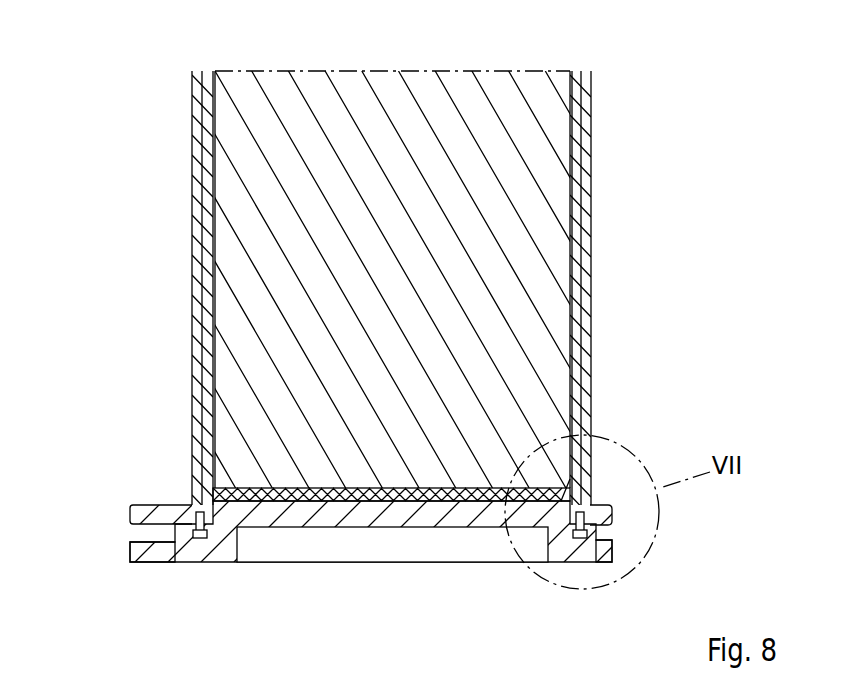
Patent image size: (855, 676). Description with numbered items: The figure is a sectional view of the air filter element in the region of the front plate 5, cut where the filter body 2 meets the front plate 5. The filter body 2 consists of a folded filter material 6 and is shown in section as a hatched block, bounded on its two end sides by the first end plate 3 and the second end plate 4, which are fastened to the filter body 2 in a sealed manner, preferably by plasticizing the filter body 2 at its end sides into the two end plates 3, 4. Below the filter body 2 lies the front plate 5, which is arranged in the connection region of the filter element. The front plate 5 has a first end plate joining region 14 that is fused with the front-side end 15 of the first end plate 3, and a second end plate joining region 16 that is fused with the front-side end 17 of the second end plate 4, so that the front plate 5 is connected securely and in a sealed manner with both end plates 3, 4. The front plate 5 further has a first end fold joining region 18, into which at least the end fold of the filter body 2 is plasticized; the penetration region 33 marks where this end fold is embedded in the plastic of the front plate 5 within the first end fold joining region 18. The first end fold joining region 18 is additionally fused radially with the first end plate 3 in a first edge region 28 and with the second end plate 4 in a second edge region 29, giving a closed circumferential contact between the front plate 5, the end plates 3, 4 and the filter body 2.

The filter body 2 is at (366, 84).
The first end plate 3 is at (180, 247).
The second end plate 4 is at (602, 185).
The front plate 5 is at (364, 573).
The filter material 6 is at (460, 82).
The first end plate joining region 14 is at (145, 562).
The front-side end 15 is at (155, 510).
The second end plate joining region 16 is at (600, 563).
The front-side end 17 is at (603, 506).
The first end fold joining region 18 is at (295, 522).
The first edge region 28 is at (203, 510).
The second edge region 29 is at (576, 512).
The penetration region 33 is at (340, 495).